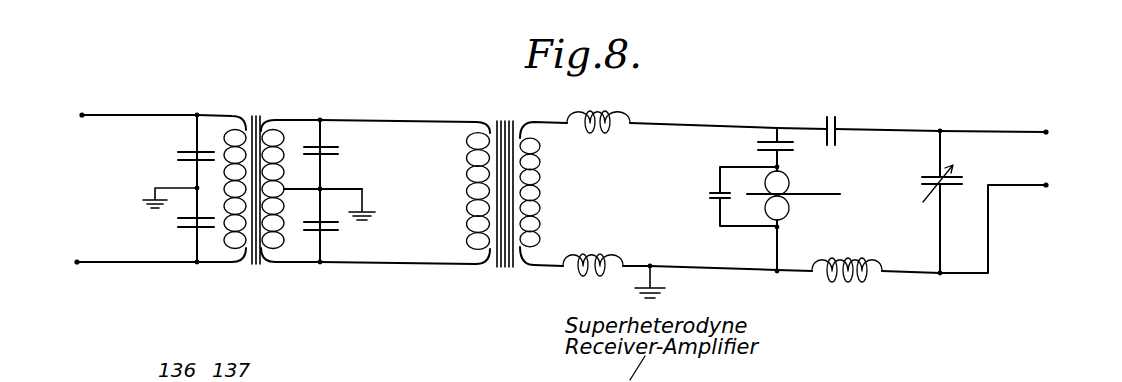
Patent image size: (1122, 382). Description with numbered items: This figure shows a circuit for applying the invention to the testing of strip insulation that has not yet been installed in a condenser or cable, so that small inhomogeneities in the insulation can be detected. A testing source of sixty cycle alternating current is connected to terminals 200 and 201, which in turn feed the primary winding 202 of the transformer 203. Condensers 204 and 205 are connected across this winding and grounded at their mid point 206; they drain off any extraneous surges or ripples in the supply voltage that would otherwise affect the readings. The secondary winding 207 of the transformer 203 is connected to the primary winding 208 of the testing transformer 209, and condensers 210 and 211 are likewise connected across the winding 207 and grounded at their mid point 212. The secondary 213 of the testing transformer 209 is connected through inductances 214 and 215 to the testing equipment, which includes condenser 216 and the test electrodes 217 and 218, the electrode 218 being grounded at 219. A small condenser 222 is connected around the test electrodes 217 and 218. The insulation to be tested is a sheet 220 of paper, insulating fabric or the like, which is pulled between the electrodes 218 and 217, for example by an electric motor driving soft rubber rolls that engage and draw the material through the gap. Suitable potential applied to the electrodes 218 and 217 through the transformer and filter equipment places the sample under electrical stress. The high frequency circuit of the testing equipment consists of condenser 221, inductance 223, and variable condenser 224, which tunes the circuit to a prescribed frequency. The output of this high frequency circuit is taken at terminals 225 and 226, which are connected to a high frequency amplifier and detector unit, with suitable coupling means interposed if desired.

The terminal 200 is at (82, 115).
The terminal 201 is at (77, 262).
The primary winding 202 is at (230, 130).
The transformer 203 is at (257, 116).
The condenser 204 is at (180, 160).
The condenser 205 is at (180, 227).
The mid point 206 is at (154, 190).
The secondary winding 207 is at (280, 138).
The primary winding 208 is at (476, 246).
The testing transformer 209 is at (503, 268).
The condenser 210 is at (340, 150).
The condenser 211 is at (338, 228).
The mid point 212 is at (362, 189).
The secondary 213 is at (537, 192).
The inductance 214 is at (606, 110).
The inductance 215 is at (598, 277).
The condenser 216 is at (760, 140).
The test electrode 217 is at (790, 179).
The test electrode 218 is at (788, 212).
The ground 219 is at (655, 282).
The sheet 220 is at (840, 194).
The condenser 221 is at (830, 117).
The small condenser 222 is at (712, 197).
The inductance 223 is at (850, 284).
The variable condenser 224 is at (965, 181).
The terminal 225 is at (1048, 132).
The terminal 226 is at (1048, 185).